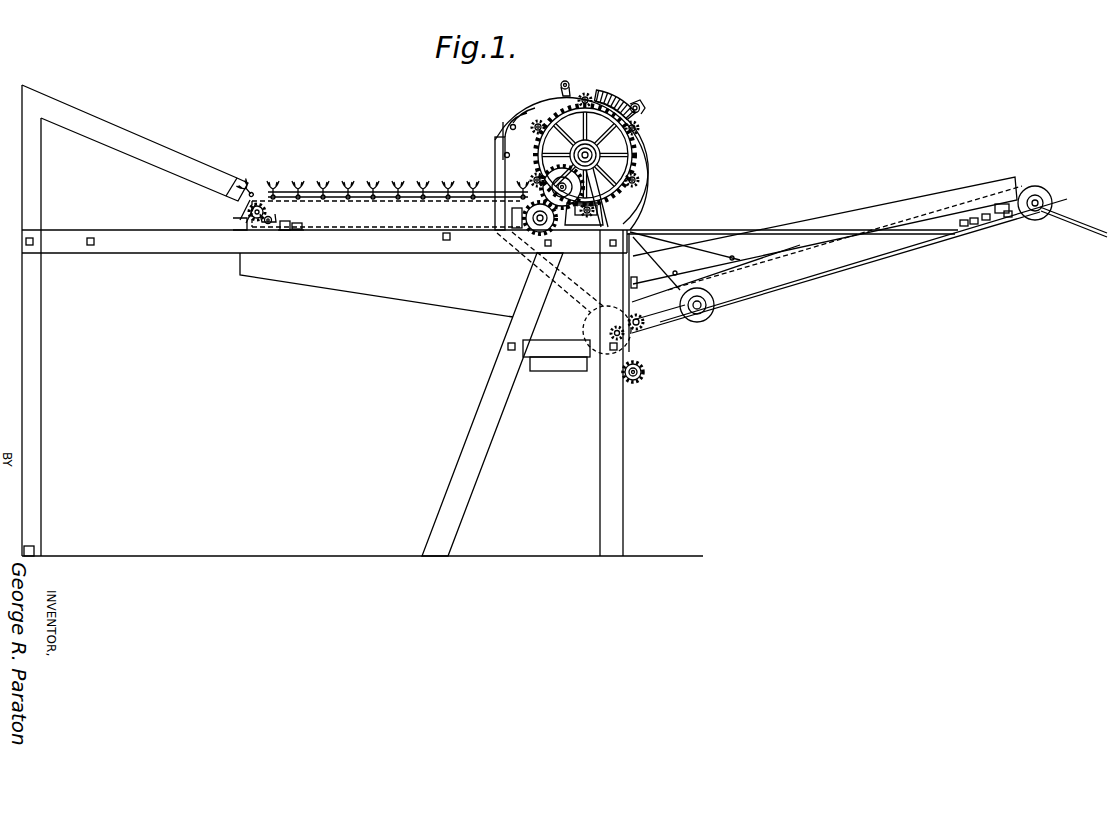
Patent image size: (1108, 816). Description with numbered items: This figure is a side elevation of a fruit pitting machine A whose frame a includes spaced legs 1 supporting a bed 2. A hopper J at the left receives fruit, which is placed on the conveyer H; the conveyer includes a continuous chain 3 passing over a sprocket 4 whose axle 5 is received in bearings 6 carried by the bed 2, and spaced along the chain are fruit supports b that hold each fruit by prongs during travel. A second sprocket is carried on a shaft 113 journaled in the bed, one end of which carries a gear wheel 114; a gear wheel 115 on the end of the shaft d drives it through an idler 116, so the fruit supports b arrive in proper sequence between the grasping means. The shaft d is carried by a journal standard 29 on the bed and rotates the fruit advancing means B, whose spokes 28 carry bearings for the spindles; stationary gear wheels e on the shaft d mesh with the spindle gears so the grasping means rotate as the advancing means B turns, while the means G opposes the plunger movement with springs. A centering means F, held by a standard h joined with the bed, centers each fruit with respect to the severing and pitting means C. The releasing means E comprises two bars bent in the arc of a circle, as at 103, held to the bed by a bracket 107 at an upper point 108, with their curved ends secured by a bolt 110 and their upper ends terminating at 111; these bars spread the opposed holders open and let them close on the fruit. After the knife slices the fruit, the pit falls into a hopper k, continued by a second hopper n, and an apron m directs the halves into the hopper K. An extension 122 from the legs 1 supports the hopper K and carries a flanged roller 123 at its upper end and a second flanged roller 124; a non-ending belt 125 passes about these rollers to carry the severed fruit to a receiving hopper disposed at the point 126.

The legs 1 is at (33, 423).
The bed 2 is at (73, 231).
The continuous chain 3 is at (360, 200).
The sprocket 4 is at (236, 210).
The axle 5 is at (265, 222).
The bearings 6 is at (279, 226).
The frame a is at (33, 365).
The fruit pitting machine A is at (362, 471).
The hopper J is at (128, 133).
The second hopper n is at (330, 282).
The hopper k is at (557, 362).
The conveyer H is at (398, 176).
The fruit supports b is at (391, 186).
The standard h is at (500, 160).
The centering means F is at (503, 137).
The fruit severing and pitting means C is at (600, 90).
The means for imparting axial movement G is at (642, 112).
The curved portion of bars 103 is at (633, 92).
The fruit advancing means B is at (612, 100).
The journal standard 29 is at (612, 168).
The stationary gear wheels e is at (647, 155).
The releasing means E is at (640, 145).
The apron m is at (627, 137).
The shaft d is at (625, 163).
The spokes 28 is at (557, 118).
The bolt 110 is at (567, 88).
The upper end portion of bars 111 is at (570, 83).
The upper connection point 108 is at (638, 106).
The bracket 107 is at (643, 190).
The idler 116 is at (567, 195).
The shaft 113 is at (535, 223).
The gear wheel 115 is at (528, 180).
The gear wheel 114 is at (512, 213).
The hopper K is at (893, 212).
The extension 122 is at (830, 273).
The non-ending belt 125 is at (767, 282).
The second flanged roller 124 is at (705, 318).
The flanged roller 123 is at (1040, 192).
The receiving hopper point 126 is at (1088, 225).